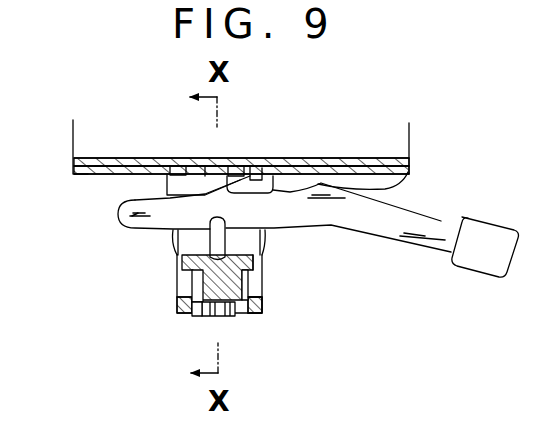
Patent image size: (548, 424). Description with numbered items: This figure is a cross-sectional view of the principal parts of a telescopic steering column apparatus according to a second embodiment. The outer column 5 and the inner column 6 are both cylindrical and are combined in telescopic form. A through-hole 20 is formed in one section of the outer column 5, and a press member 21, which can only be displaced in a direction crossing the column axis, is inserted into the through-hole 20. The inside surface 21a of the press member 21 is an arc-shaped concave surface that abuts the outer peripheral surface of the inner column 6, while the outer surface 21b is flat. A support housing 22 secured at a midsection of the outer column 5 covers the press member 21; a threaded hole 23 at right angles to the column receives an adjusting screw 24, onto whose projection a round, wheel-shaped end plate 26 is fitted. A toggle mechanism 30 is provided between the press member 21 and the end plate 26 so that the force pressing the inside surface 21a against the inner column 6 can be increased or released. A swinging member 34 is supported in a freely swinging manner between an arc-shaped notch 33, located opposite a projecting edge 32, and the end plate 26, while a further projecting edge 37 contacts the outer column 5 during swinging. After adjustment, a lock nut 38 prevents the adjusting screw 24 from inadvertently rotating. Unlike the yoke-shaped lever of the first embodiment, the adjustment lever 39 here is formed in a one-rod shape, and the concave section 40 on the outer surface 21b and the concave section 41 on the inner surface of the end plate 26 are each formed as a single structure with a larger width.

The outer column 5 is at (108, 177).
The inner column 6 is at (88, 175).
The through-hole 20 is at (165, 158).
The press member 21 is at (251, 162).
The inside surface 21a is at (186, 163).
The outer surface 21b is at (277, 172).
The support housing 22 is at (262, 288).
The threaded hole 23 is at (247, 320).
The adjusting screw 24 is at (200, 318).
The end plate 26 is at (176, 260).
The toggle mechanism 30 is at (168, 244).
The projecting edge 32 is at (205, 162).
The arc-shaped notch 33 is at (175, 238).
The swinging member 34 is at (232, 232).
The projecting edge 37 is at (408, 172).
The lock nut 38 is at (264, 311).
The adjustment lever 39 is at (442, 217).
The concave section 40 is at (230, 162).
The concave section 41 is at (256, 262).